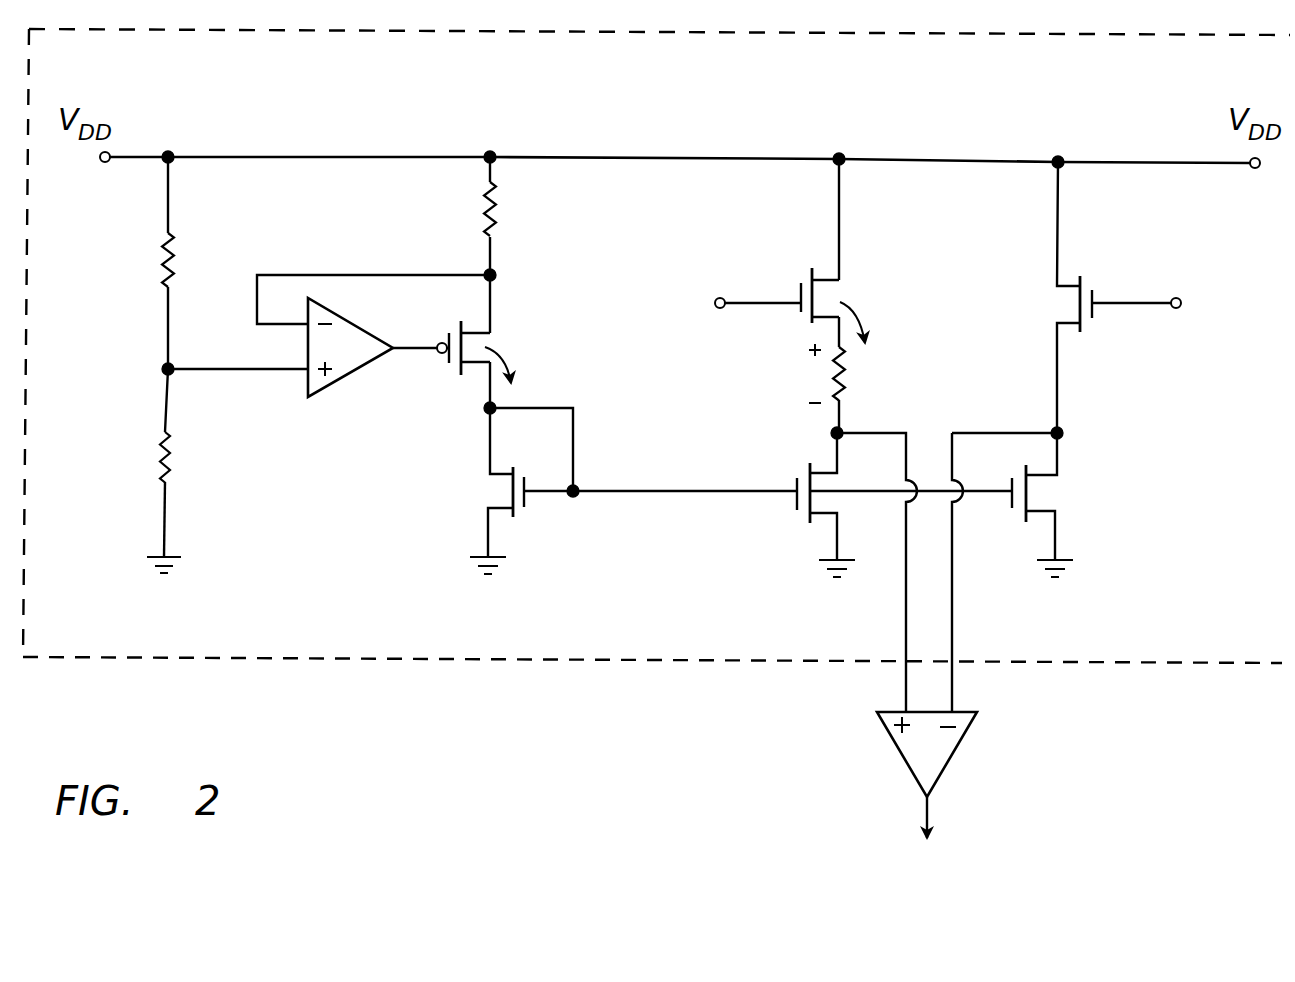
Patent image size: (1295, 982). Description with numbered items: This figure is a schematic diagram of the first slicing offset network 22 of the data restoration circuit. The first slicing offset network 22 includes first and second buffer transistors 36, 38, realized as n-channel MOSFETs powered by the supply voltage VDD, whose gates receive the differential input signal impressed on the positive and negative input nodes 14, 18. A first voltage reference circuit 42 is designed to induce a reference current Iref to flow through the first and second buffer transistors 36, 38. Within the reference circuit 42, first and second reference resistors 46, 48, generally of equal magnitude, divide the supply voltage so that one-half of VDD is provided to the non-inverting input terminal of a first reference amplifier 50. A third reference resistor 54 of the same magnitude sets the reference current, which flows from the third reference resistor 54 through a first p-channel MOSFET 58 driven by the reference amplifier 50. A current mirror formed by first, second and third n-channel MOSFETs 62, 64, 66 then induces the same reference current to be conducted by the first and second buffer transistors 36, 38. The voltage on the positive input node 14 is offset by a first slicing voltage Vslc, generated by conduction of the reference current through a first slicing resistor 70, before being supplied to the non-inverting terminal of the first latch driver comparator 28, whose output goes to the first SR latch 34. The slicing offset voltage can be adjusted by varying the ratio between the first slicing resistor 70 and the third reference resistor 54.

The positive input circuit node 14 is at (754, 283).
The negative input circuit node 18 is at (1145, 286).
The first slicing offset network 22 is at (438, 664).
The first latch driver comparator 28 is at (955, 757).
The first SR latch 34 is at (902, 840).
The first buffer transistor 36 is at (814, 258).
The second buffer transistor 38 is at (1090, 262).
The first voltage reference circuit 42 is at (158, 365).
The first reference resistor 46 is at (160, 266).
The second reference resistor 48 is at (170, 470).
The first reference amplifier 50 is at (355, 372).
The third reference resistor 54 is at (496, 211).
The first p-channel MOSFET 58 is at (499, 325).
The first n-channel MOSFET 62 is at (488, 490).
The second n-channel MOSFET 64 is at (800, 525).
The third n-channel MOSFET 66 is at (1063, 494).
The first slicing resistor 70 is at (848, 373).